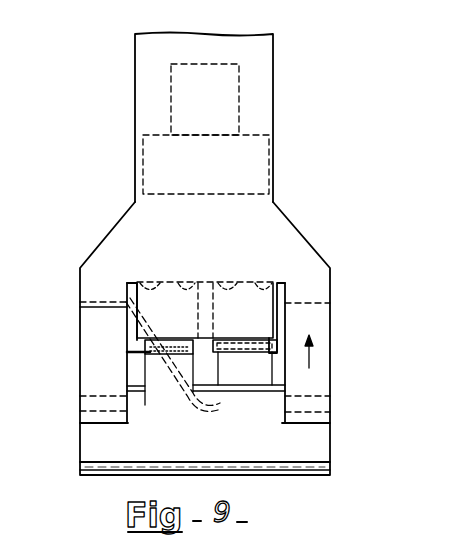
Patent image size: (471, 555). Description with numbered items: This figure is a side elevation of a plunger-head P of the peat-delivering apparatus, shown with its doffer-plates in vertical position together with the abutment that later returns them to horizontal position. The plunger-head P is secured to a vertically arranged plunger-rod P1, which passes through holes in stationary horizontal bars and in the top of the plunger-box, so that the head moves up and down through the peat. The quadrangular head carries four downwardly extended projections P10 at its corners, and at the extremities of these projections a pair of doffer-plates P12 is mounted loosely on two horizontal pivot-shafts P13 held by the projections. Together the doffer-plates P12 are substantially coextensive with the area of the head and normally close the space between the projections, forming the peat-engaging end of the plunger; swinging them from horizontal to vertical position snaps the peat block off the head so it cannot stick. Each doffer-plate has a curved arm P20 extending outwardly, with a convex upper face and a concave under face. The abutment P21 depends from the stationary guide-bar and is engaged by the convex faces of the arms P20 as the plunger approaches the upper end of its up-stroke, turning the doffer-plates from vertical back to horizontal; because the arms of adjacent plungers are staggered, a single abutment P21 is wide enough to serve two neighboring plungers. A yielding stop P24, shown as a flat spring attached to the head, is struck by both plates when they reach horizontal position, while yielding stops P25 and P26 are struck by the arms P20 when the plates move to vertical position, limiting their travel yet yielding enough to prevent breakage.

The plunger-head P is at (110, 237).
The plunger-rod P1 is at (171, 98).
The abutment P21 is at (262, 95).
The projection P10 is at (95, 335).
The pivot-shaft P13 is at (312, 397).
The doffer-plate P12 is at (318, 448).
The yielding stop P26 is at (132, 292).
The yielding stop P25 is at (280, 322).
The yielding stop P24 is at (163, 357).
The curved arm P20 is at (157, 368).